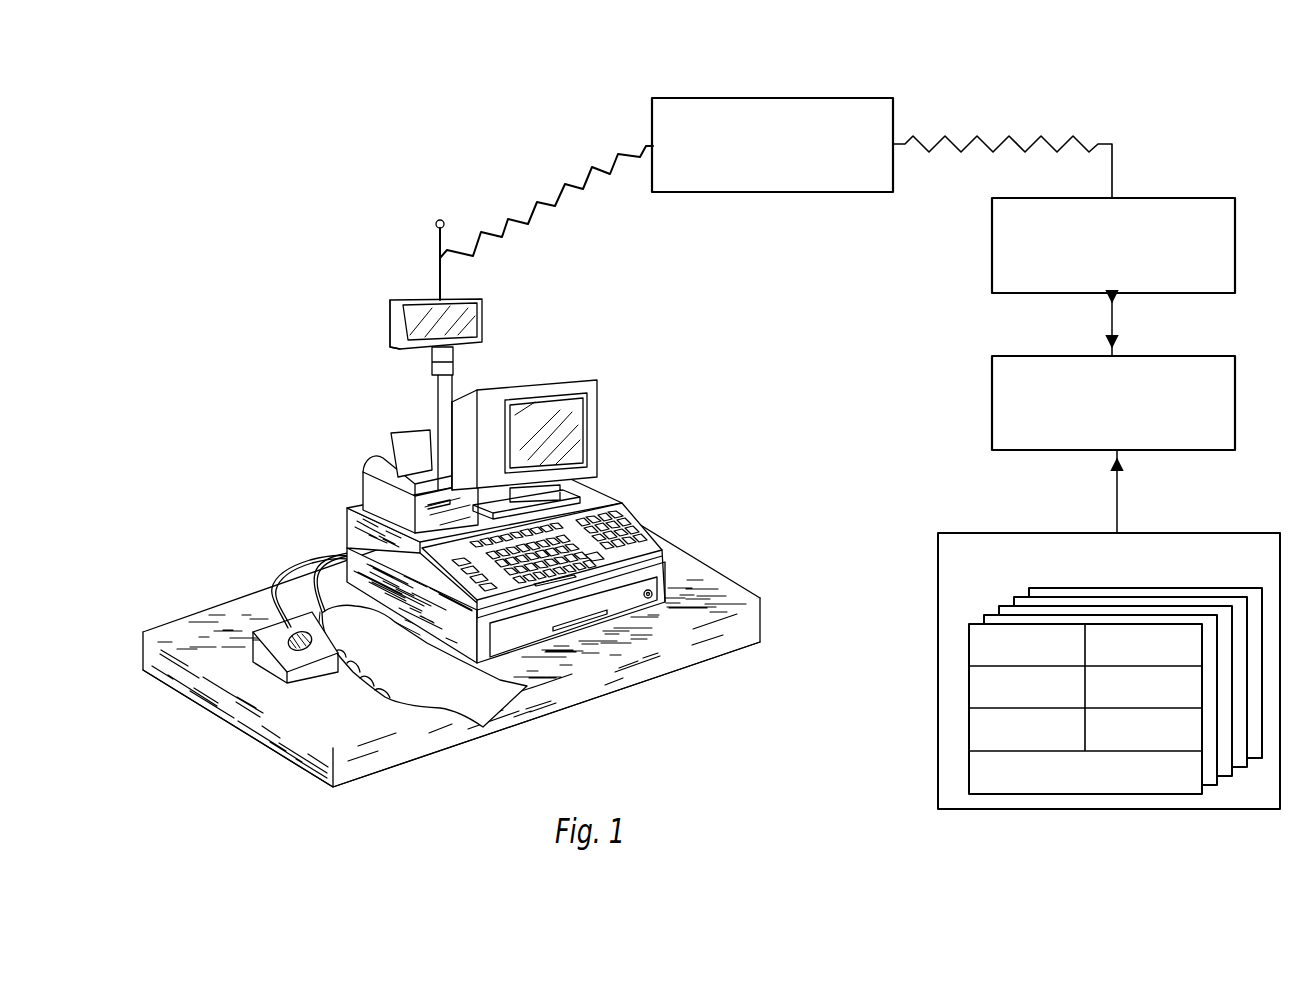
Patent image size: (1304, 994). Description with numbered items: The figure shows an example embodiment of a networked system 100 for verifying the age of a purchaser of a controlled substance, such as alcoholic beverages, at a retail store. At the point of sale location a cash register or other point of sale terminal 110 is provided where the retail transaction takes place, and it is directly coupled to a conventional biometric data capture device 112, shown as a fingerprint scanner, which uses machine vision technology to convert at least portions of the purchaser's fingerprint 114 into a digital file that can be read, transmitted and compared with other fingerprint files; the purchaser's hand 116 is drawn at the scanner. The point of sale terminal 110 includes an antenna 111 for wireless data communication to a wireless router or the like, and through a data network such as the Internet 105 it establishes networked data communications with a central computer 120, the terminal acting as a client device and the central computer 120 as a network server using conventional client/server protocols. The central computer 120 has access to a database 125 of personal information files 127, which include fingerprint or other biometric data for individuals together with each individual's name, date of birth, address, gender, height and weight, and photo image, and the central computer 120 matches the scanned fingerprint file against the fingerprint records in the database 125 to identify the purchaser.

The system 100 is at (347, 109).
The Internet 105 is at (712, 98).
The point of sale terminal 110 is at (347, 508).
The antenna 111 is at (440, 249).
The biometric data capture device 112 is at (265, 612).
The fingerprint 114 is at (347, 556).
The user's hand/finger 116 is at (328, 634).
The central computer 120 is at (1208, 198).
The database 125 is at (990, 410).
The personal information files 127 is at (937, 607).